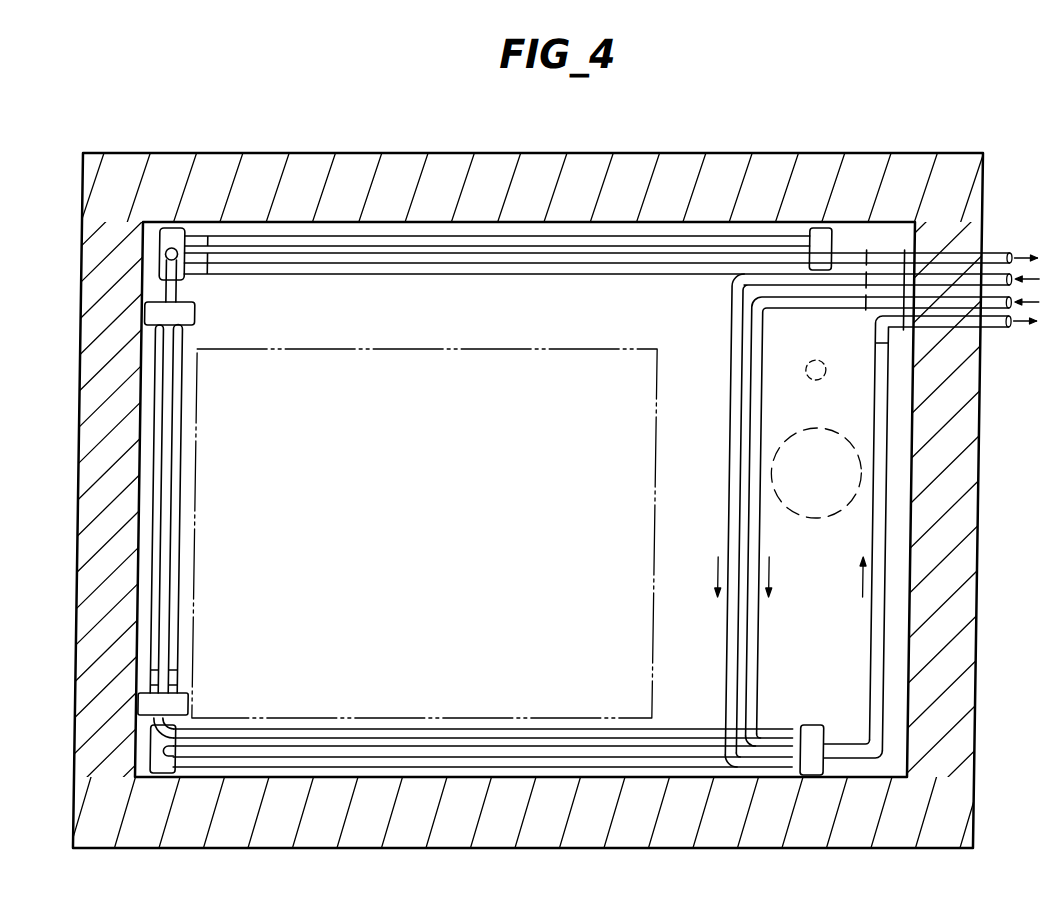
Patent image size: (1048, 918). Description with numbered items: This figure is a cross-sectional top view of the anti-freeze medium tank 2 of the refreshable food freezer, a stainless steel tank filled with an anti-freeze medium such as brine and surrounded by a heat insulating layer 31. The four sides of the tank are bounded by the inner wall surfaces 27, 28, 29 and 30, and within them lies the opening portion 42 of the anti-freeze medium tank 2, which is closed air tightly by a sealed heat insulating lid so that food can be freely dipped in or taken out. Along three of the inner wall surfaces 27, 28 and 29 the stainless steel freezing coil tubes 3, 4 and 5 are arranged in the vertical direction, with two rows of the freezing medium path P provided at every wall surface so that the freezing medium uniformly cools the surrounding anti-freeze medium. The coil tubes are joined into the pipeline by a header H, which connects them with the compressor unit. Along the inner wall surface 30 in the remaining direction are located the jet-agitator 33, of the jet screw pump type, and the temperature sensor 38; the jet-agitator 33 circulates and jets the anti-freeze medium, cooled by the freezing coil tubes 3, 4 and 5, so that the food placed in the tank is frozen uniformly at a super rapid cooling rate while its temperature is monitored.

The anti-freeze medium tank 2 is at (403, 152).
The freezing coil tube 3 is at (514, 252).
The inner wall of anti-freeze medium tank 27 is at (620, 222).
The header H is at (822, 240).
The freezing medium path P is at (997, 240).
The temperature sensor 38 is at (828, 370).
The jet-agitator 33 is at (862, 462).
The inner wall of anti-freeze medium tank 30 is at (916, 537).
The heat insulating layer 31 is at (957, 692).
The freezing coil tube 4 is at (180, 428).
The inner wall of anti-freeze medium tank 28 is at (140, 516).
The opening portion of the anti-freeze medium tank 42 is at (330, 712).
The inner wall of anti-freeze medium tank 29 is at (512, 778).
The freezing coil tube 5 is at (572, 765).